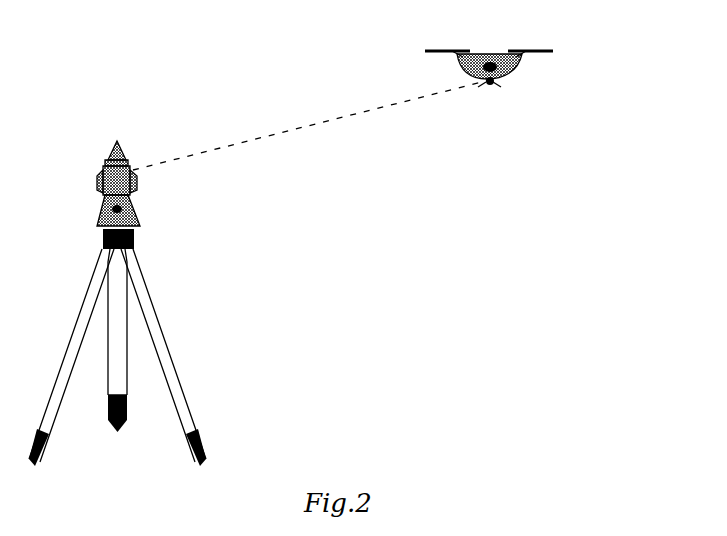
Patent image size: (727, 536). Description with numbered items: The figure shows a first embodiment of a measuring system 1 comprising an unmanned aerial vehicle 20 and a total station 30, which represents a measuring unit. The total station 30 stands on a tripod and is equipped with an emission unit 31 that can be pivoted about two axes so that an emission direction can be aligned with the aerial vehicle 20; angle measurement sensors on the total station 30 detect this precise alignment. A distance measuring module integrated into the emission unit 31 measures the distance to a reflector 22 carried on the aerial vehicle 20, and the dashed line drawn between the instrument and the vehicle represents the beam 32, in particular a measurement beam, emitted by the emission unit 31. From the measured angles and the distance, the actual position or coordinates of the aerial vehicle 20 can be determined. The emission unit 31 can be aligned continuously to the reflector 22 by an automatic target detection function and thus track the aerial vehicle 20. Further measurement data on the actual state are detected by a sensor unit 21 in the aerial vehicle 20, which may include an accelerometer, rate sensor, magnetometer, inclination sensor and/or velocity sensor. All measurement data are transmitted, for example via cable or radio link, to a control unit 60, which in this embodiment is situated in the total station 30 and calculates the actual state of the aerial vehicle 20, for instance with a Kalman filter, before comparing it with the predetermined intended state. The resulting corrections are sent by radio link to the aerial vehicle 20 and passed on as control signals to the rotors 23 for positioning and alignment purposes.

The measuring system 1 is at (164, 57).
The unmanned aerial vehicle 20 is at (503, 26).
The sensor unit 21 is at (517, 67).
The reflector 22 is at (494, 85).
The rotors 23 is at (543, 50).
The total station 30 is at (101, 122).
The emission unit 31 is at (139, 182).
The beam 32 is at (294, 133).
The control unit 60 is at (105, 203).